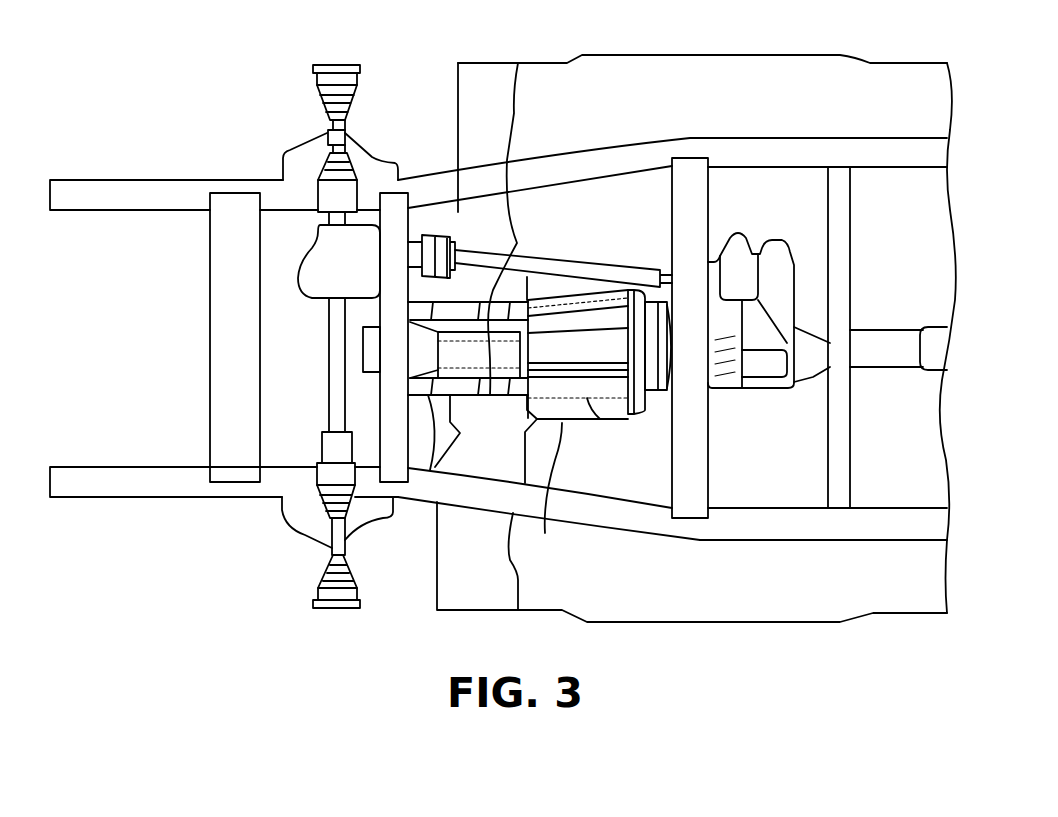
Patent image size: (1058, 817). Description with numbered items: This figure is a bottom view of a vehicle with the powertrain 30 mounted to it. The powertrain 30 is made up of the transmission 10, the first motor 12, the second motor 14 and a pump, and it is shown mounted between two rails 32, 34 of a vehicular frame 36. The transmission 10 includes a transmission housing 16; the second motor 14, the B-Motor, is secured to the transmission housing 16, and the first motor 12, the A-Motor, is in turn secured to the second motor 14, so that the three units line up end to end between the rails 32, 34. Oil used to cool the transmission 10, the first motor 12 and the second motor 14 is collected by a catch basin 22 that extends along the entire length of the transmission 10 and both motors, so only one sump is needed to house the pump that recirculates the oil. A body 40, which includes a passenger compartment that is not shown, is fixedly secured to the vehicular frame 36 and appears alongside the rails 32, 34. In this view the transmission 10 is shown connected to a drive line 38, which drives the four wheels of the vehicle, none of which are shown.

The transmission 10 is at (592, 240).
The first motor 12 is at (430, 470).
The second motor 14 is at (498, 395).
The transmission housing 16 is at (548, 492).
The catch basin 22 is at (517, 240).
The powertrain 30 is at (623, 424).
The rail 32 is at (132, 467).
The rail 34 is at (125, 180).
The vehicular frame 36 is at (235, 176).
The drive line 38 is at (767, 253).
The body 40 is at (487, 63).